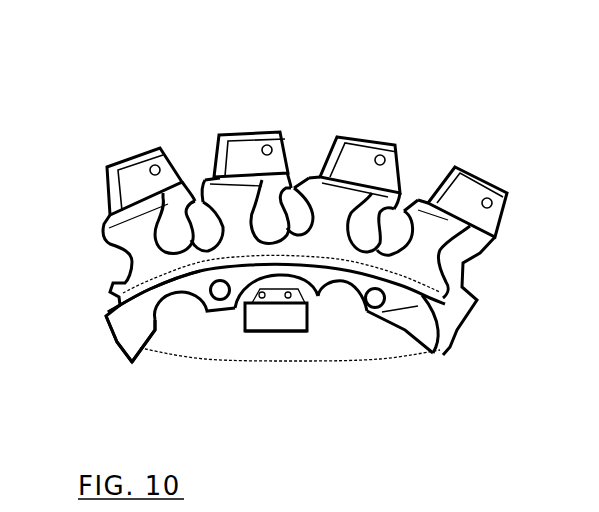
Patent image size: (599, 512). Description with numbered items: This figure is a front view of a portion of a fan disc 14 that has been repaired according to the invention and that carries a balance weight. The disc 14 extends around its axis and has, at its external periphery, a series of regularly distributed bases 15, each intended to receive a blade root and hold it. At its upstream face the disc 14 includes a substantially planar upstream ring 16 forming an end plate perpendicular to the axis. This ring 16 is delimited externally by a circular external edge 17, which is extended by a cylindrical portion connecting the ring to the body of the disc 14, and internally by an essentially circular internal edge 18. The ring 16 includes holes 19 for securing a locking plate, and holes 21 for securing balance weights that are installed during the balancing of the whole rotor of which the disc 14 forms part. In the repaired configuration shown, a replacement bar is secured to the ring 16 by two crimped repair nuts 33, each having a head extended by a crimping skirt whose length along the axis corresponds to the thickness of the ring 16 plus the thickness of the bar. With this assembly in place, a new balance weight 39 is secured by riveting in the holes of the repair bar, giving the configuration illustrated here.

The fan disc 14 is at (119, 147).
The bases 15 is at (192, 188).
The upstream ring 16 is at (116, 343).
The external edge 17 is at (142, 348).
The internal edge 18 is at (143, 298).
The holes 19 is at (222, 307).
The holes 21 is at (265, 298).
The crimped repair nuts 33 is at (203, 312).
The balance weight 39 is at (268, 331).